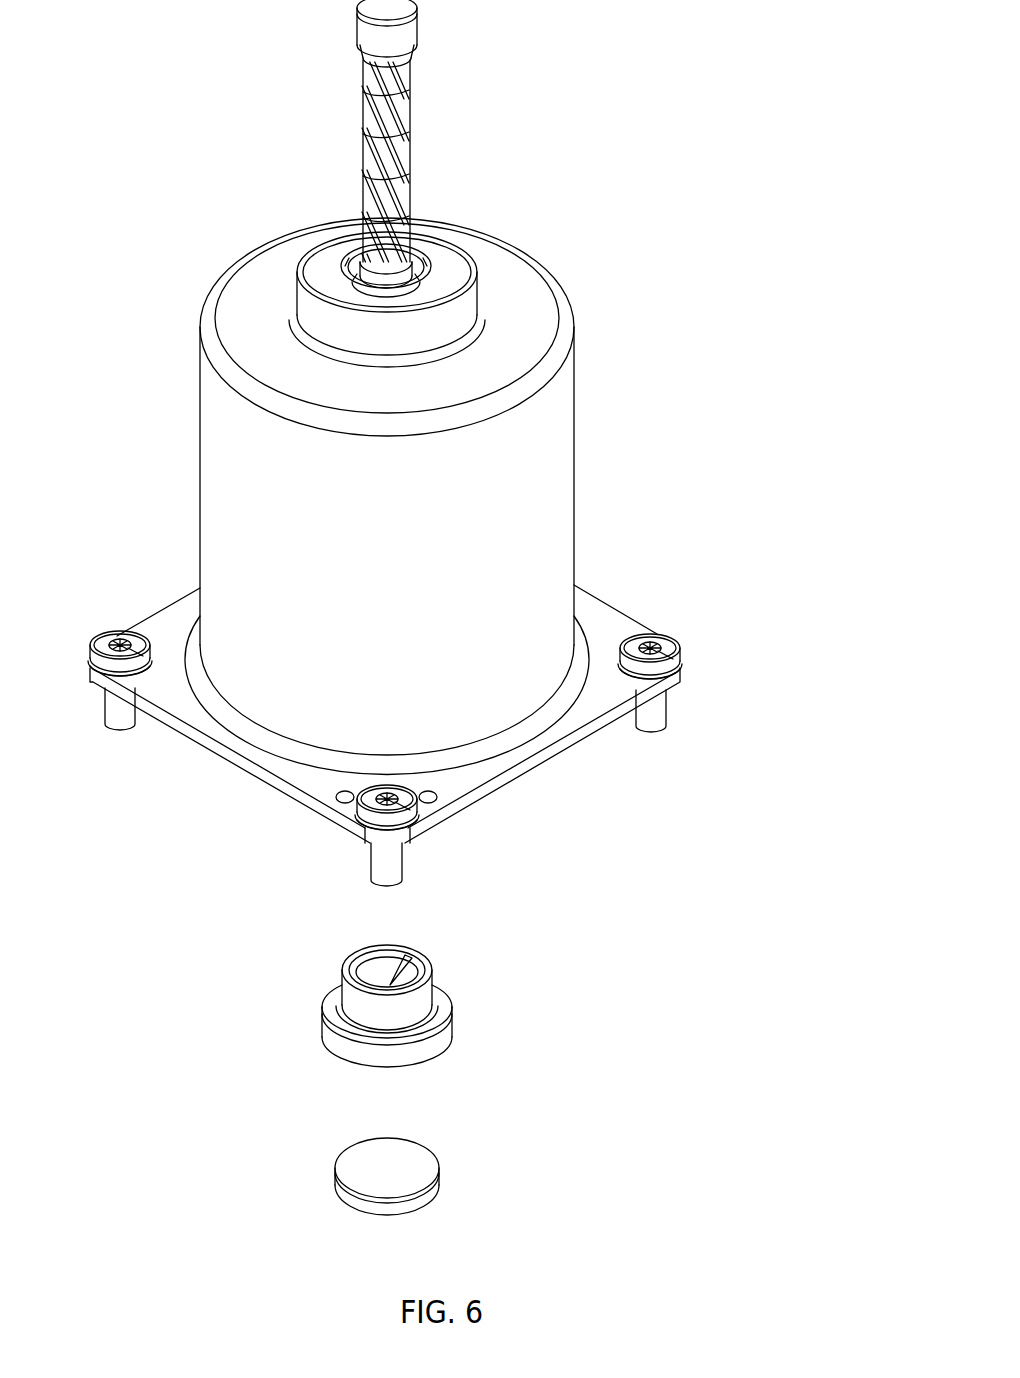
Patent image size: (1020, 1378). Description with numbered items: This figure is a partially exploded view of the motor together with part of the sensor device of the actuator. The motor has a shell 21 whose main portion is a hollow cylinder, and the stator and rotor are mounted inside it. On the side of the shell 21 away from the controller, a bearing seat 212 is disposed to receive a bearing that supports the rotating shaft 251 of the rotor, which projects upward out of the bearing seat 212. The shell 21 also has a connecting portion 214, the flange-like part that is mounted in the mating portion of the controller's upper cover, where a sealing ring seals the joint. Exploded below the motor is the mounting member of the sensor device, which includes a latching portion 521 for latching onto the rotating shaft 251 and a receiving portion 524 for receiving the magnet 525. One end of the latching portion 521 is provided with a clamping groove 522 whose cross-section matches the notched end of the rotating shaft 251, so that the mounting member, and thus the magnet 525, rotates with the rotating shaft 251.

The rotating shaft 251 is at (395, 160).
The bearing seat 212 is at (450, 317).
The shell 21 is at (545, 455).
The connecting portion 214 is at (605, 618).
The latching portion 521 is at (396, 1006).
The clamping groove 522 is at (370, 970).
The receiving portion 524 is at (427, 1045).
The magnet 525 is at (415, 1160).